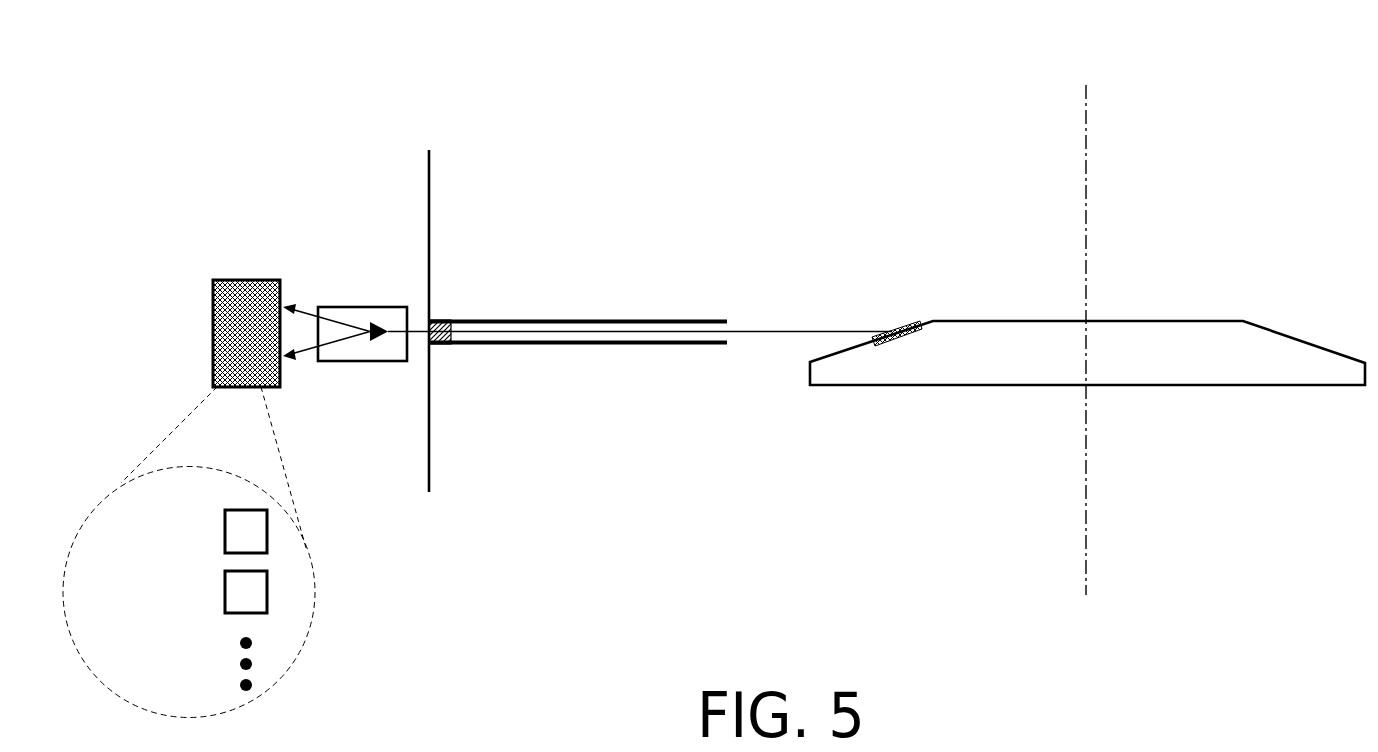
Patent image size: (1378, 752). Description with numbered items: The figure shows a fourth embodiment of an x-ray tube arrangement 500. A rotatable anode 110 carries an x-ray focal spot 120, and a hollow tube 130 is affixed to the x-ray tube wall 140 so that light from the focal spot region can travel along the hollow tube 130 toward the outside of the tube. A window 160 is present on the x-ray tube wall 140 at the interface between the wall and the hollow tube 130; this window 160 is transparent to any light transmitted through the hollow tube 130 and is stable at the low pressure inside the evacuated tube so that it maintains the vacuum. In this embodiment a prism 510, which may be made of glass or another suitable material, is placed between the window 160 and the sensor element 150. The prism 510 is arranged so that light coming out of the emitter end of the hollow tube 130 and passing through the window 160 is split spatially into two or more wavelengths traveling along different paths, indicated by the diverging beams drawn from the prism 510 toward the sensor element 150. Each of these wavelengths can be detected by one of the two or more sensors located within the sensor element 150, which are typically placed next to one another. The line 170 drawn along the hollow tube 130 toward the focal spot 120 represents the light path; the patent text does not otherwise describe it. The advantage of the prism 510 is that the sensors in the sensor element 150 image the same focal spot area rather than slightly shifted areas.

The x-ray tube arrangement 500 is at (906, 86).
The rotatable anode 110 is at (1186, 320).
The x-ray focal spot 120 is at (908, 320).
The hollow tube 130 is at (603, 319).
The x-ray tube wall 140 is at (430, 192).
The sensor element 150 is at (247, 279).
The window 160 is at (444, 346).
The beam axis 170 is at (780, 330).
The prism 510 is at (360, 306).